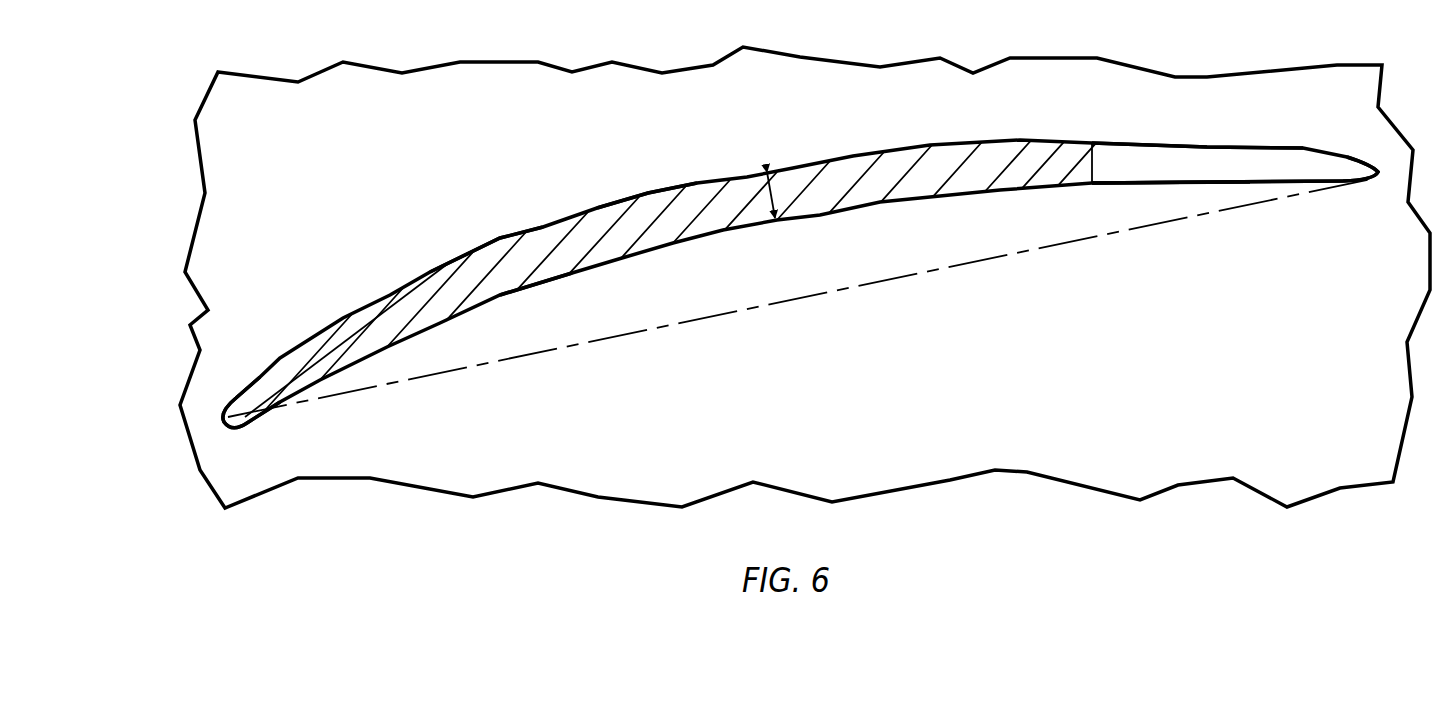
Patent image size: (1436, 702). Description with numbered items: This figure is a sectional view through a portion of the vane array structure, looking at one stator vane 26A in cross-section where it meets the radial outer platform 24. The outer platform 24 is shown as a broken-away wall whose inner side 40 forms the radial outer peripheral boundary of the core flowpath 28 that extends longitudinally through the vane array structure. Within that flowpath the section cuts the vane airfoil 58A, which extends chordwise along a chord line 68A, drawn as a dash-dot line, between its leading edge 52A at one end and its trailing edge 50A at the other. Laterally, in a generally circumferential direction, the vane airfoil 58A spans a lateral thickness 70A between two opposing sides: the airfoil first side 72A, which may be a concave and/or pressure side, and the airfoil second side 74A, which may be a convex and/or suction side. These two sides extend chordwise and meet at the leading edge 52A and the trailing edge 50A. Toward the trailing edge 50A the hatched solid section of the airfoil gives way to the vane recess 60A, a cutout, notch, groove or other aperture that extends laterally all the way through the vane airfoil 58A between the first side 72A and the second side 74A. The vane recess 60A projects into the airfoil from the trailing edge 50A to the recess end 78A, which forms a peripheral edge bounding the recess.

The radial outer platform 24 is at (193, 163).
The stator vane 26A is at (375, 248).
The core flowpath 28 is at (223, 236).
The inner side of the outer platform 40 is at (222, 110).
The trailing edge 50A is at (1380, 172).
The leading edge 52A is at (222, 417).
The vane airfoil 58A is at (652, 182).
The vane recess 60A is at (1180, 172).
The chord line 68A is at (787, 300).
The lateral thickness 70A is at (773, 193).
The airfoil first side 72A is at (532, 293).
The airfoil second side 74A is at (496, 242).
The end of the vane recess 78A is at (1207, 157).